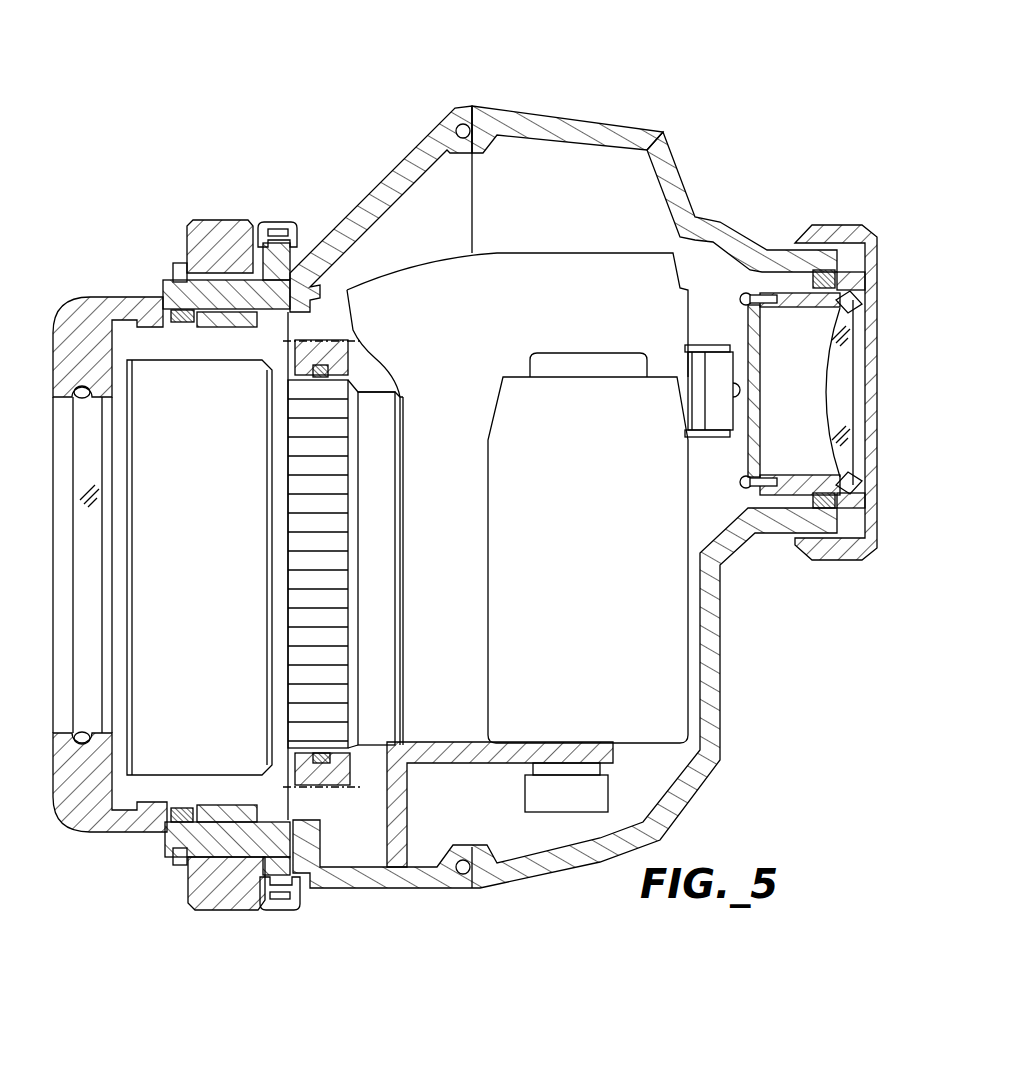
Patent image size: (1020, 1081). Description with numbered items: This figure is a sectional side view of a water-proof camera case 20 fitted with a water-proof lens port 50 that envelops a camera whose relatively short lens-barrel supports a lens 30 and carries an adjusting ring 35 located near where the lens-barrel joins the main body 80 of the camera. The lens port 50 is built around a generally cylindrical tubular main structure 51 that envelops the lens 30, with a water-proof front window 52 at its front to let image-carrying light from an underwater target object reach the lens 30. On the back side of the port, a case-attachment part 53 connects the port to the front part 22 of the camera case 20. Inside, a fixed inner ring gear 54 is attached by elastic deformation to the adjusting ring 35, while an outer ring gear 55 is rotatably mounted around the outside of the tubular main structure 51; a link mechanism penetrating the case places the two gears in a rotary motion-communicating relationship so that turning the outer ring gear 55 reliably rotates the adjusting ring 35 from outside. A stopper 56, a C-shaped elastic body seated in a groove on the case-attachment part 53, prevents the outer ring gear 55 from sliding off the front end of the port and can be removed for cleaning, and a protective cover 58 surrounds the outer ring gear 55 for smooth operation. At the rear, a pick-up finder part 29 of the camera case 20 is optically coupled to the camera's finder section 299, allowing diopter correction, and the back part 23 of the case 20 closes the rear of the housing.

The camera case 20 is at (572, 49).
The front part of the camera case 22 is at (390, 172).
The back part of the camera case 23 is at (617, 128).
The finder section 299 is at (662, 262).
The pick-up finder part 29 is at (838, 225).
The main body of the camera 80 is at (657, 647).
The water-proof lens port 50 is at (188, 129).
The tubular main structure 51 is at (97, 813).
The water-proof front window 52 is at (83, 445).
The lens 30 is at (158, 375).
The adjusting ring 35 is at (315, 488).
The fixed inner ring gear 54 is at (342, 362).
The case-attachment part 53 is at (167, 837).
The outer ring gear 55 is at (217, 233).
The stopper 56 is at (173, 863).
The protective cover 58 is at (280, 218).